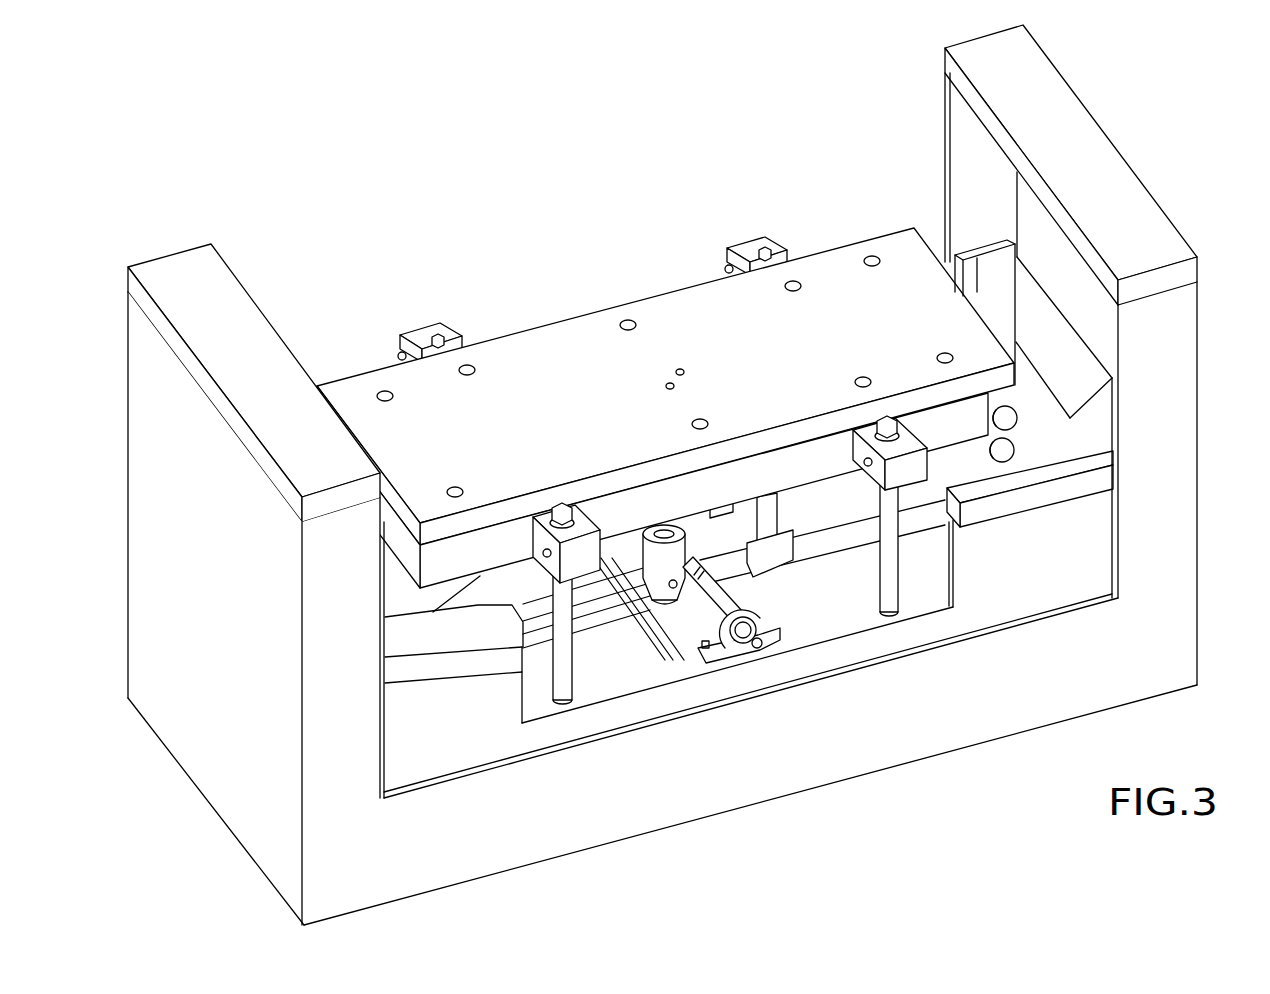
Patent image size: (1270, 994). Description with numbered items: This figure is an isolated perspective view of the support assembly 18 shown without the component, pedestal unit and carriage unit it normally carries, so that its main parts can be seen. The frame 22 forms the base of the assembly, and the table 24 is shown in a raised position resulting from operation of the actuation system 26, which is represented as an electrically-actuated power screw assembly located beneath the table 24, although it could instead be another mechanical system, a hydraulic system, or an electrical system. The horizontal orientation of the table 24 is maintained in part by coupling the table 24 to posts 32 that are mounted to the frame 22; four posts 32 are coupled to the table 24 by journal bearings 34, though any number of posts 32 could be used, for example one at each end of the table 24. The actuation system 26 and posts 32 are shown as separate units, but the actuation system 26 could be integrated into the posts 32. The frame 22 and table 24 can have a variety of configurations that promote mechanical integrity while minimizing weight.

The support assembly 18 is at (649, 215).
The frame 22 is at (1120, 188).
The table 24 is at (562, 332).
The actuation system 26 is at (653, 660).
The posts 32 is at (438, 335).
The journal bearings 34 is at (548, 520).